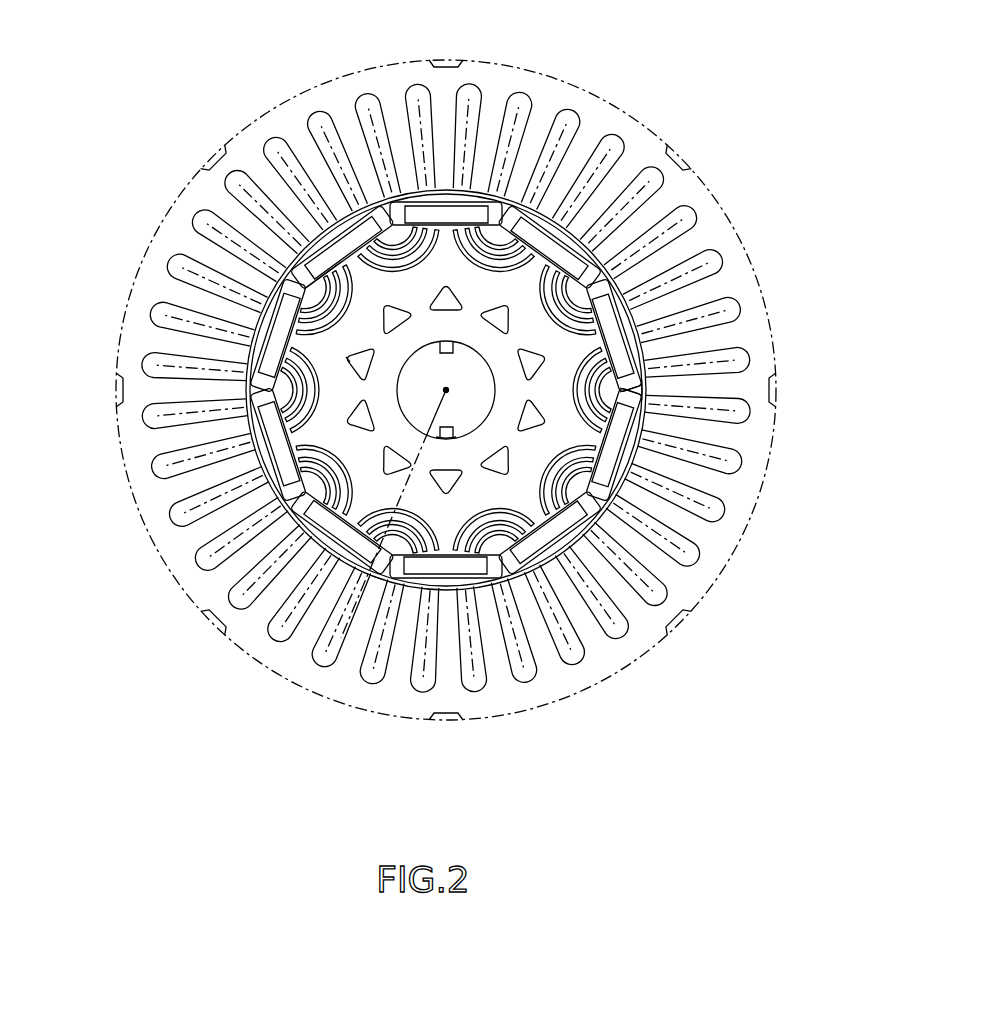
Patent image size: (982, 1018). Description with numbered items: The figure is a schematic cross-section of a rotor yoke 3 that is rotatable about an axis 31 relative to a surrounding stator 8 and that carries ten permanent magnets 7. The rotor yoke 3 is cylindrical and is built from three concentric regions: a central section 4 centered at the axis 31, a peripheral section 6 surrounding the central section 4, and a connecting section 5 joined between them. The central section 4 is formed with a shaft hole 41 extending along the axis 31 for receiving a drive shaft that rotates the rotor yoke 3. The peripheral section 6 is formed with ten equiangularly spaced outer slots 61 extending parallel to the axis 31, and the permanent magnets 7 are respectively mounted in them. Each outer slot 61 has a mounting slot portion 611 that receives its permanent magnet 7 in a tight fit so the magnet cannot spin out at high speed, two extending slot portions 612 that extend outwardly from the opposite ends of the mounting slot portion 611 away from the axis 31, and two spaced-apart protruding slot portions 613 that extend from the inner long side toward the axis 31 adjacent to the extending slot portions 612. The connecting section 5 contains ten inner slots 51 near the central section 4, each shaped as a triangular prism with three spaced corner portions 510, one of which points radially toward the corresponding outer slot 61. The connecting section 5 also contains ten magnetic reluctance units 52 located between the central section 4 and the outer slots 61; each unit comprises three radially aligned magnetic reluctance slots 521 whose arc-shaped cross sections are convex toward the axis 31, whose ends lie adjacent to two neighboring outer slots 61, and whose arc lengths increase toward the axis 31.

The rotor yoke 3 is at (695, 240).
The axis 31 is at (355, 637).
The central section 4 is at (425, 447).
The shaft hole 41 is at (478, 408).
The connecting section 5 is at (442, 510).
The inner slots 51 is at (448, 295).
The corner portions 510 is at (316, 348).
The magnetic reluctance units 52 is at (300, 290).
The magnetic reluctance slots 521 is at (328, 285).
The peripheral section 6 is at (455, 450).
The outer slots 61 is at (560, 235).
The mounting slot portion 611 is at (637, 442).
The extending slot portions 612 is at (643, 375).
The protruding slot portions 613 is at (643, 393).
The permanent magnets 7 is at (742, 480).
The stator 8 is at (170, 572).